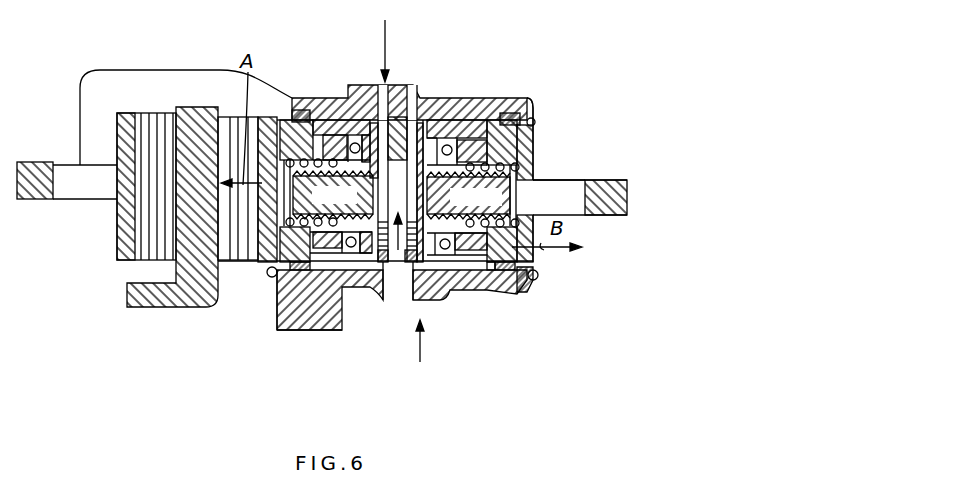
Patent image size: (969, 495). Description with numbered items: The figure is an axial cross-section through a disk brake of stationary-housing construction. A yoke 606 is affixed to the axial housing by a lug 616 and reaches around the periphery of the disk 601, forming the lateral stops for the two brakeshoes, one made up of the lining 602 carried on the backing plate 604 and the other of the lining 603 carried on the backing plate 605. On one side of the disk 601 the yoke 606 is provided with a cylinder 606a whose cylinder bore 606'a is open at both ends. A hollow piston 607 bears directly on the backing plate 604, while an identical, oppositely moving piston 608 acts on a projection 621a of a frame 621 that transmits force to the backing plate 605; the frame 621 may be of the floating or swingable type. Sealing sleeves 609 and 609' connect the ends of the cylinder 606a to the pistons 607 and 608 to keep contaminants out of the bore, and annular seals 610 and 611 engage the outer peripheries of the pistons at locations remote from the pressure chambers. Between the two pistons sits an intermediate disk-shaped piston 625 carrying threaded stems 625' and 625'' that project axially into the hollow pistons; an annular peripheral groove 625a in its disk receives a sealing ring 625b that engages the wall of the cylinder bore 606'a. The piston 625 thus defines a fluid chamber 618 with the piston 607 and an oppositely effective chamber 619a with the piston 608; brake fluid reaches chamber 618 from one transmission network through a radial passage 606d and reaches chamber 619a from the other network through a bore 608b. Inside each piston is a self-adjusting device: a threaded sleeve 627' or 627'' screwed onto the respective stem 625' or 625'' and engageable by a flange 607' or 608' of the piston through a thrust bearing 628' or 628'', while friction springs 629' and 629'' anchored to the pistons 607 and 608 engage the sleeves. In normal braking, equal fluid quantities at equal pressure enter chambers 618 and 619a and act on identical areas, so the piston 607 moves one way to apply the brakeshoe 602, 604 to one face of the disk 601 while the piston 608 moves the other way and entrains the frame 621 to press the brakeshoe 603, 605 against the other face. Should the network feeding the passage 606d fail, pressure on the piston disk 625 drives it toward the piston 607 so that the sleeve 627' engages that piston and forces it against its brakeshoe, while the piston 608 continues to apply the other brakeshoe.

The disk 601 is at (190, 240).
The lining 602 is at (230, 127).
The lining 603 is at (145, 232).
The backing plate 604 is at (262, 233).
The backing plate 605 is at (125, 117).
The yoke 606 is at (296, 142).
The cylinder 606a is at (540, 99).
The radial passage 606d is at (391, 44).
The cylinder bore 606'a is at (508, 299).
The piston 607 is at (341, 81).
The flange 607' is at (347, 111).
The piston 608 is at (470, 103).
The flange 608' is at (467, 97).
The bore 608b is at (424, 262).
The sealing sleeve 609 is at (274, 312).
The sealing sleeve 609' is at (550, 276).
The annular seal 610 is at (310, 325).
The annular seal 611 is at (517, 295).
The lug 616 is at (314, 305).
The fluid chamber 618 is at (378, 262).
The chamber 619a is at (420, 262).
The frame 621 is at (615, 198).
The projection 621a is at (558, 190).
The intermediate disk-shaped piston 625 is at (399, 223).
The annular peripheral groove 625a is at (405, 150).
The sealing ring 625b is at (395, 135).
The threaded stem 625' is at (333, 195).
The threaded stem 625'' is at (468, 195).
The threaded sleeve 627' is at (307, 106).
The threaded sleeve 627'' is at (534, 99).
The thrust bearing 628' is at (331, 303).
The thrust bearing 628'' is at (479, 292).
The friction spring 629' is at (298, 125).
The friction spring 629'' is at (545, 172).